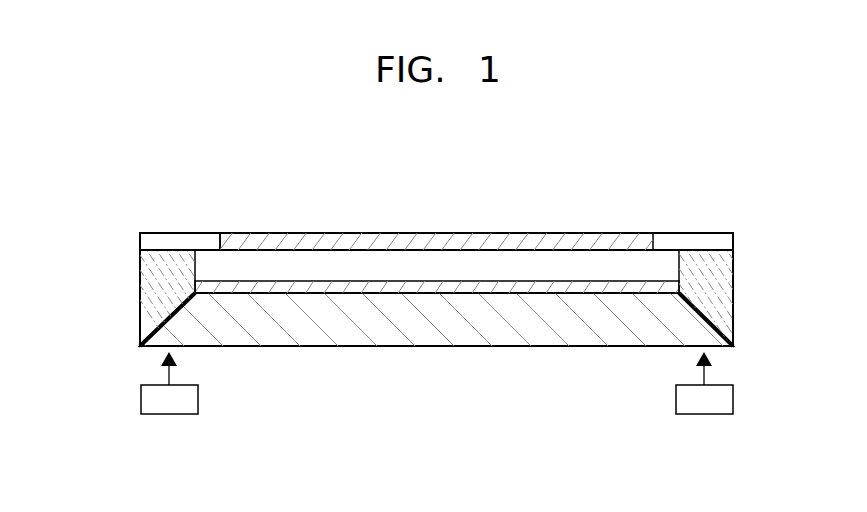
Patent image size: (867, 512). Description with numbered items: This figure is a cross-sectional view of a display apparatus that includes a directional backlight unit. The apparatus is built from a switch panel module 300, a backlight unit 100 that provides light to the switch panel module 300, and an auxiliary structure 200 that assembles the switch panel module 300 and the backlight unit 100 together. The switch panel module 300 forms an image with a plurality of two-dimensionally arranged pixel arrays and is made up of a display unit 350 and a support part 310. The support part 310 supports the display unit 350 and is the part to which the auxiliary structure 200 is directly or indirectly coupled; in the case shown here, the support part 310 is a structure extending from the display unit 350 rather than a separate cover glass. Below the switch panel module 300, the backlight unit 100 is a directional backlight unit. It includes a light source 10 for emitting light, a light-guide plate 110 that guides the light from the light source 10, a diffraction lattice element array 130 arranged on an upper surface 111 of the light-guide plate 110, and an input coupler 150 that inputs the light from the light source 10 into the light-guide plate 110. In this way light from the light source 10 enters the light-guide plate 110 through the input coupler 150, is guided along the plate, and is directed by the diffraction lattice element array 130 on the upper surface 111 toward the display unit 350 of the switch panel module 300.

The light source 10 is at (168, 410).
The backlight unit 100 is at (343, 358).
The light-guide plate 110 is at (436, 338).
The upper surface 111 is at (408, 293).
The diffraction lattice element array 130 is at (477, 288).
The input coupler 150 is at (180, 312).
The auxiliary structure 200 is at (148, 282).
The switch panel module 300 is at (229, 214).
The support part 310 is at (165, 242).
The display unit 350 is at (296, 245).